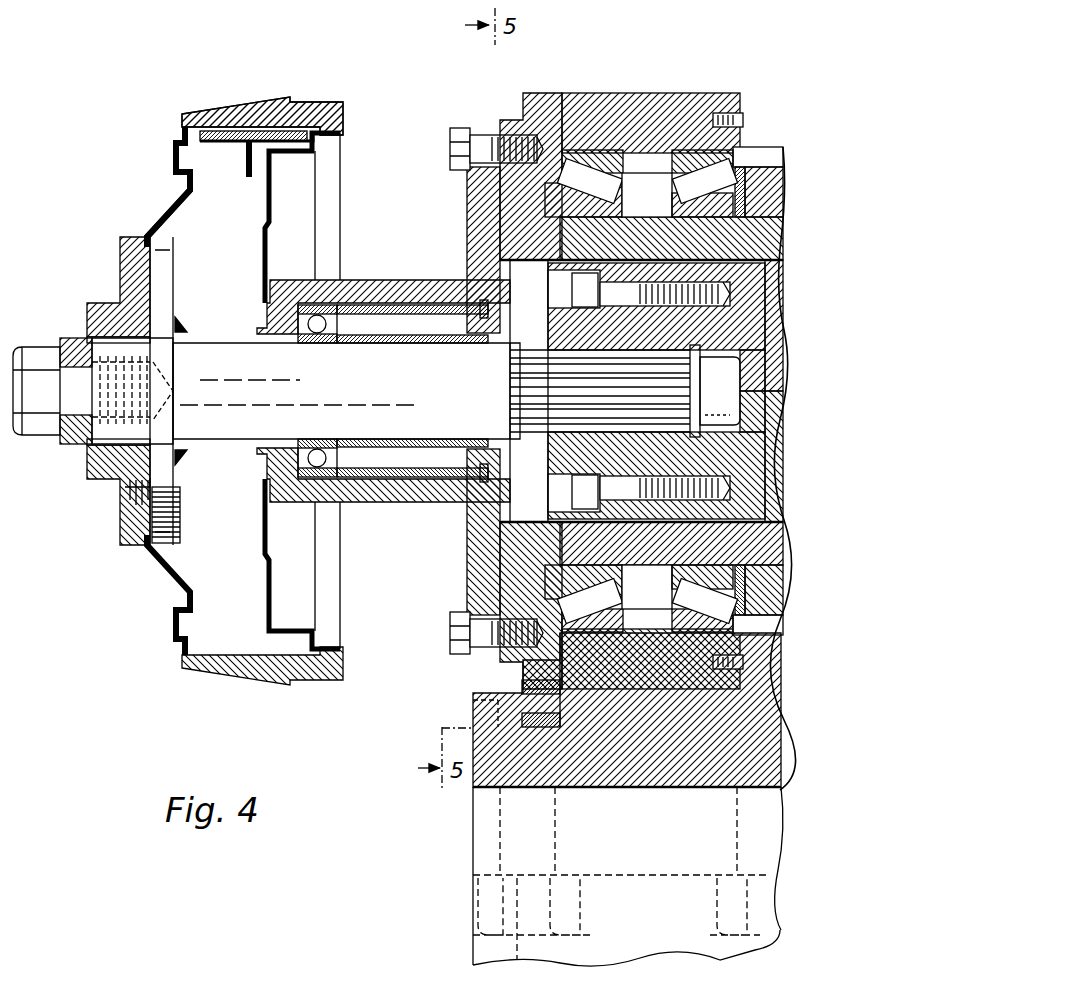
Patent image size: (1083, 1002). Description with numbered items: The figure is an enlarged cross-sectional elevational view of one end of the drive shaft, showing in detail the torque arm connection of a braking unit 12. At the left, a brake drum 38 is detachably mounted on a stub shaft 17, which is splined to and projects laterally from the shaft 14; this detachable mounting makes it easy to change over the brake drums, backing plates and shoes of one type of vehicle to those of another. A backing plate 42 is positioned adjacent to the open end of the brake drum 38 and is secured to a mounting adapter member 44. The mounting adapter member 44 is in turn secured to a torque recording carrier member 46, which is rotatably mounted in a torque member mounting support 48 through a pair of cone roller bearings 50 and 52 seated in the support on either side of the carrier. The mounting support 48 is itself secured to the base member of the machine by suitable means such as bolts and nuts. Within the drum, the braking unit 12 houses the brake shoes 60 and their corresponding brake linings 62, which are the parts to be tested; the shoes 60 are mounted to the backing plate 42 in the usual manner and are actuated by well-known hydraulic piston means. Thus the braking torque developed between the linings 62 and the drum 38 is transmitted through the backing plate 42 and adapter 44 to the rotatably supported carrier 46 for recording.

The braking unit 12 is at (166, 104).
The shaft 14 is at (742, 322).
The stub shaft 17 is at (250, 401).
The brake drum 38 is at (244, 672).
The backing plate 42 is at (275, 222).
The mounting adapter member 44 is at (286, 498).
The torque recording carrier member 46 is at (528, 113).
The torque member mounting support 48 is at (655, 745).
The cone roller bearing 50 is at (588, 158).
The cone roller bearing 52 is at (690, 162).
The brake shoe 60 is at (246, 146).
The brake lining 62 is at (207, 142).